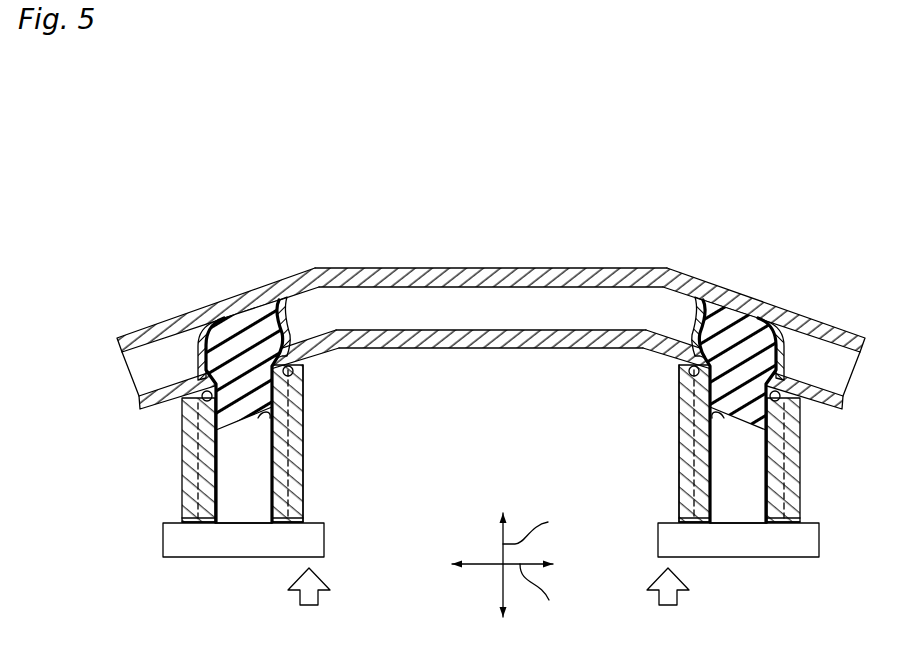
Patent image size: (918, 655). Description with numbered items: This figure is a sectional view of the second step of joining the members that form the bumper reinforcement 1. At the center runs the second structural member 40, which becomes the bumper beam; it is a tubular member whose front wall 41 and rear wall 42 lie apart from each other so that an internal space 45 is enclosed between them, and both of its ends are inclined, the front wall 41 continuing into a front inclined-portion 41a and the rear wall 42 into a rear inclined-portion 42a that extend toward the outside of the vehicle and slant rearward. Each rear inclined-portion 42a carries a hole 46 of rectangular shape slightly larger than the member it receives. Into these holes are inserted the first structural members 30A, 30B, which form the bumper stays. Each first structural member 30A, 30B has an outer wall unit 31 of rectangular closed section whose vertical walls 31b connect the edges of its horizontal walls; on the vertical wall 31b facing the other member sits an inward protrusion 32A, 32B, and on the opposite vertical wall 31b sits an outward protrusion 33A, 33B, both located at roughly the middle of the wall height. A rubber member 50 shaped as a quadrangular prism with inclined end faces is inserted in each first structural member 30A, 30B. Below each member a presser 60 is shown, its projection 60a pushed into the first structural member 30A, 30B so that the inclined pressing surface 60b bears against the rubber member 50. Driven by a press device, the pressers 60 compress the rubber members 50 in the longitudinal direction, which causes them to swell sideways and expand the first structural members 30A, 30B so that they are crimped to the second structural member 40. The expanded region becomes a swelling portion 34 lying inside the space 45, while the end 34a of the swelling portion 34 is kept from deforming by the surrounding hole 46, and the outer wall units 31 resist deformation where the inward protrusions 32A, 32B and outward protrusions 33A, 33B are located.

The bumper reinforcement 1 is at (266, 246).
The first structural member 30A is at (176, 454).
The first structural member 30B is at (668, 466).
The outer wall unit 31 is at (282, 529).
The vertical wall 31b is at (184, 507).
The inward protrusion 32A is at (305, 402).
The inward protrusion 32B is at (677, 394).
The outward protrusion 33A is at (183, 469).
The outward protrusion 33B is at (798, 470).
The swelling portion 34 is at (188, 332).
The end of the swelling portion 34a is at (198, 372).
The second structural member 40 is at (582, 258).
The front wall 41 is at (522, 280).
The front inclined-portion 41a is at (116, 334).
The rear wall 42 is at (513, 350).
The rear inclined-portion 42a is at (140, 408).
The space 45 is at (466, 318).
The hole 46 is at (203, 405).
The rubber member 50 is at (240, 325).
The presser 60 is at (258, 563).
The projection 60a is at (232, 512).
The pressing surface 60b is at (306, 436).